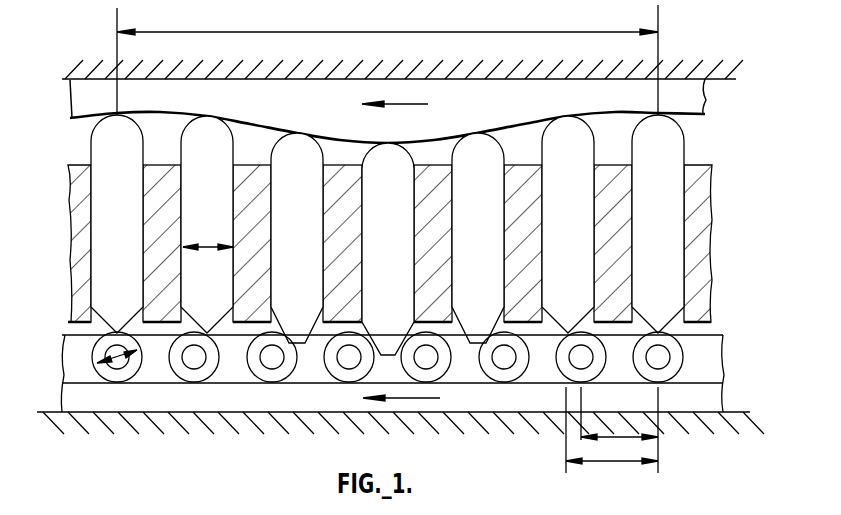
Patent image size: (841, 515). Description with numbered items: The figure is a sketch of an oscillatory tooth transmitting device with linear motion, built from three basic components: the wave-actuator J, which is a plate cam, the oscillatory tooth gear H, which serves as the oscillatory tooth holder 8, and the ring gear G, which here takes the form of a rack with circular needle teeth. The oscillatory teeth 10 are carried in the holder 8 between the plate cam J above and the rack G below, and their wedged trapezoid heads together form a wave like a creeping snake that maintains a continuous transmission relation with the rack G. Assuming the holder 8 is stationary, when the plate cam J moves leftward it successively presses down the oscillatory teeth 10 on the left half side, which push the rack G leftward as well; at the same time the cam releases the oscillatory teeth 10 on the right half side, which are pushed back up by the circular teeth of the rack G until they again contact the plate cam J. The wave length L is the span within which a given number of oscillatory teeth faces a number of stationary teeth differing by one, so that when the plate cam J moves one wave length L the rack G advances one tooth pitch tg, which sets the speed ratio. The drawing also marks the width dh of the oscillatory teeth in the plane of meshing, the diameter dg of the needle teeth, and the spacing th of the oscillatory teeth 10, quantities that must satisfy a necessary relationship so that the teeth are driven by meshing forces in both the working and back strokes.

The wave-actuator J is at (87, 103).
The wave length L is at (377, 18).
The oscillatory tooth gear H is at (385, 243).
The oscillatory tooth holder 8 is at (690, 186).
The oscillatory teeth 10 is at (668, 147).
The width of oscillatory teeth dh is at (208, 236).
The ring gear G is at (80, 347).
The diameter of needle teeth dg is at (93, 361).
The pitch of needle teeth tg is at (619, 430).
The finger pitch th is at (612, 430).